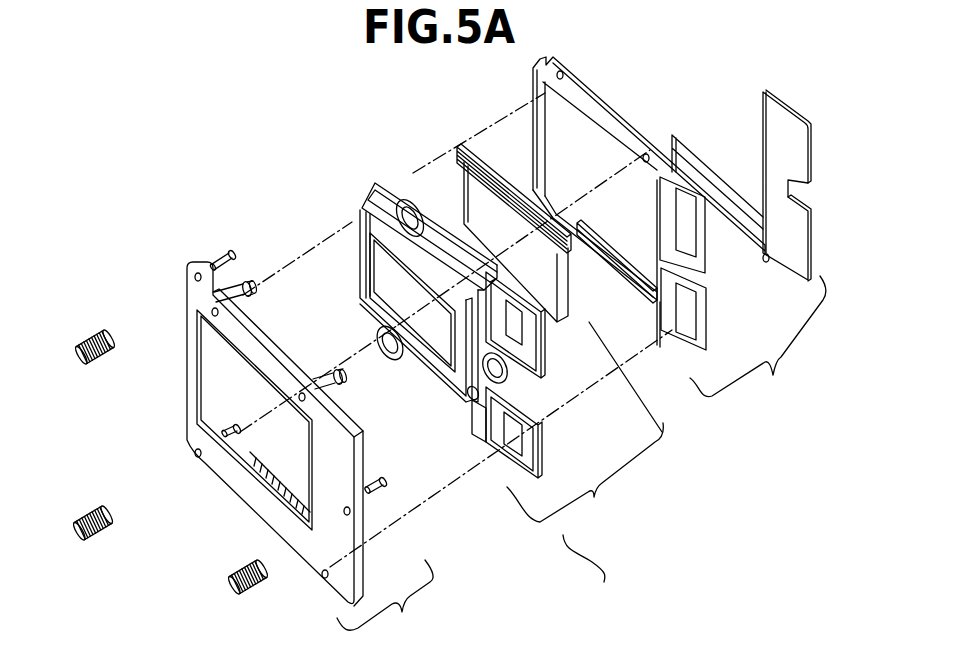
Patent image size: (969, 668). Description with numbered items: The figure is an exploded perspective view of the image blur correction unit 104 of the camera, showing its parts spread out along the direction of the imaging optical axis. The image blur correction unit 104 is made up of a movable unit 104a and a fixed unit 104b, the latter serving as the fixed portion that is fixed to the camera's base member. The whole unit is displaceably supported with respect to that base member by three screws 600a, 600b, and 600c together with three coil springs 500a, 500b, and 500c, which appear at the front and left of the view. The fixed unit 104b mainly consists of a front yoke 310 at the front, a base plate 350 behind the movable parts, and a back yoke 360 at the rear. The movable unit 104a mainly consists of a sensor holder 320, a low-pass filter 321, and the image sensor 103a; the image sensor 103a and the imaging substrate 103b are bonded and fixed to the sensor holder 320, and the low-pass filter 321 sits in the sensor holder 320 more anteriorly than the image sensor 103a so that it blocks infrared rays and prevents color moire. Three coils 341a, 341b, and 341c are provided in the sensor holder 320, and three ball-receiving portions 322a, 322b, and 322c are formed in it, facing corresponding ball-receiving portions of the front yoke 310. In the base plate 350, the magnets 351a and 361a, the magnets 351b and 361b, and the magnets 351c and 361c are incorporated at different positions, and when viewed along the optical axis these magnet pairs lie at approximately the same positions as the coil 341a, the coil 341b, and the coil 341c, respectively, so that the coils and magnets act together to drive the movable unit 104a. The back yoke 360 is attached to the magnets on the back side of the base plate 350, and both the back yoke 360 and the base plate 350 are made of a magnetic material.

The front yoke 310 is at (183, 292).
The sensor holder 320 is at (395, 283).
The low-pass filter 321 is at (380, 262).
The ball-receiving portion 322a is at (400, 199).
The ball-receiving portion 322b is at (386, 361).
The ball-receiving portion 322c is at (472, 402).
The coil 341a is at (530, 352).
The coil 341b is at (470, 430).
The coil 341c is at (528, 428).
The image sensor 103a is at (464, 197).
The imaging substrate 103b is at (481, 156).
The base plate 350 is at (661, 249).
The magnet 351a is at (685, 232).
The magnet 351b is at (660, 328).
The magnet 351c is at (688, 308).
The back yoke 360 is at (739, 246).
The magnet 361a is at (670, 195).
The magnet 361b is at (643, 317).
The magnet 361c is at (670, 318).
The coil spring 500a is at (80, 334).
The coil spring 500b is at (80, 510).
The coil spring 500c is at (231, 584).
The screw 600a is at (216, 258).
The screw 600b is at (227, 431).
The screw 600c is at (380, 500).
The image blur correction unit 104 is at (594, 573).
The movable unit 104a is at (585, 476).
The fixed unit 104b is at (581, 463).